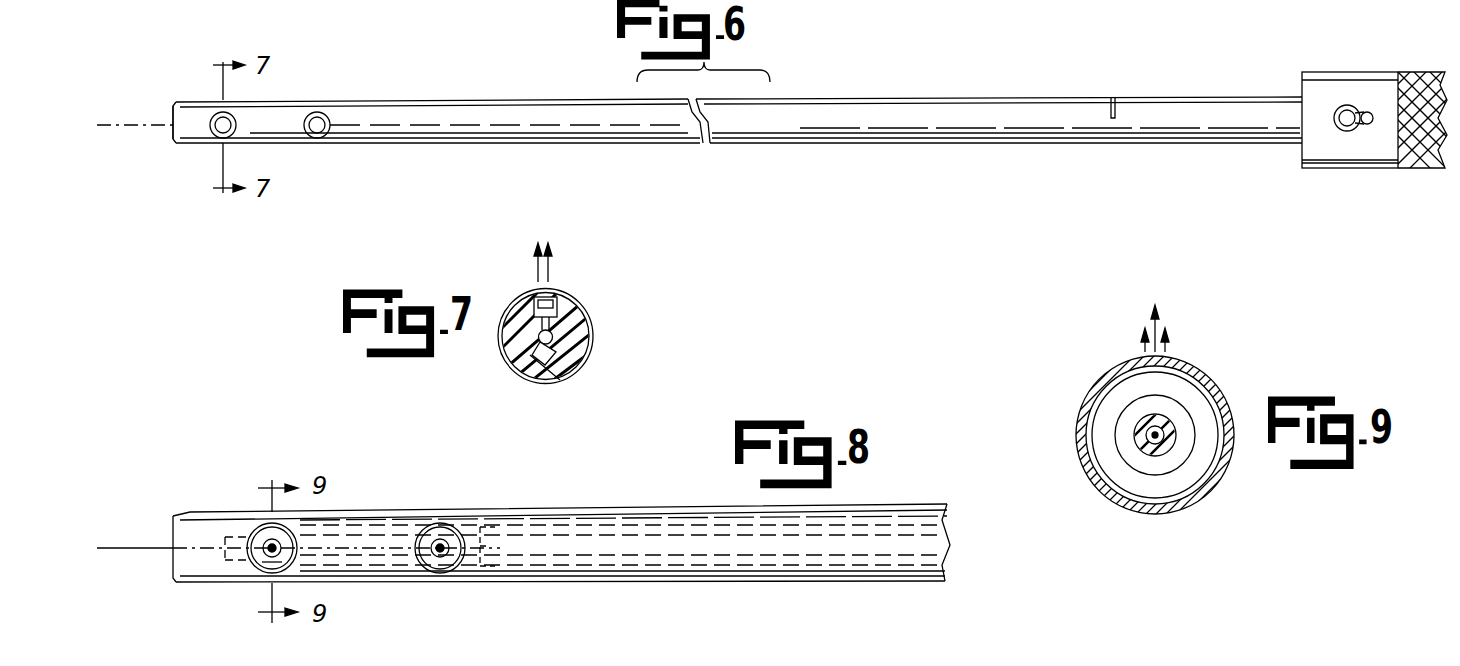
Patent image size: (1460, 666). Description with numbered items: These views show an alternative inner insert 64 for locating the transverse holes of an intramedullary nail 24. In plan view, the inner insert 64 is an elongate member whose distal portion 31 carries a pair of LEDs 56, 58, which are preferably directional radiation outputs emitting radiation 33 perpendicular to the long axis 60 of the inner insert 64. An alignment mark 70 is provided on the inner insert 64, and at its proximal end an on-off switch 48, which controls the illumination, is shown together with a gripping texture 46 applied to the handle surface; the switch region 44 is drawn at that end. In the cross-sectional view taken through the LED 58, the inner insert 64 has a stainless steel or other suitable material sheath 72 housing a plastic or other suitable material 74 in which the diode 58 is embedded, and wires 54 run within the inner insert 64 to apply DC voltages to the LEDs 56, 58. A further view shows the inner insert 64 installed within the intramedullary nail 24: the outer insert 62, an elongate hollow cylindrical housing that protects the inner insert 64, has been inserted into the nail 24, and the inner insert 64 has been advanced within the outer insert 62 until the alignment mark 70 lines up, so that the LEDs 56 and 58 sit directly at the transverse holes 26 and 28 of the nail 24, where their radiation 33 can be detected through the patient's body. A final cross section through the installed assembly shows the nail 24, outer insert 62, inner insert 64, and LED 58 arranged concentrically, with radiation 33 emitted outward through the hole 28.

In FIG. 8, the intramedullary nail 24 is at (500, 508).
In FIG. 9, the intramedullary nail 24 is at (1230, 463).
In FIG. 8, the transverse hole 26 is at (470, 518).
In FIG. 8, the transverse hole 28 is at (255, 532).
In FIG. 9, the transverse hole 28 is at (1193, 372).
In FIG. 6, the distal portion 31 is at (186, 152).
In FIG. 7, the radiation 33 is at (553, 252).
In FIG. 9, the radiation 33 is at (1170, 343).
In FIG. 6, the switch assembly 44 is at (1352, 50).
In FIG. 6, the gripping texture 46 is at (1420, 168).
In FIG. 6, the on-off switch 48 is at (1368, 112).
In FIG. 7, the wires 54 is at (560, 365).
In FIG. 6, the LED 56 is at (320, 125).
In FIG. 8, the LED 56 is at (440, 540).
In FIG. 6, the LED 58 is at (215, 115).
In FIG. 7, the LED 58 is at (548, 298).
In FIG. 8, the LED 58 is at (276, 545).
In FIG. 9, the LED 58 is at (1155, 420).
In FIG. 6, the long axis 60 is at (130, 125).
In FIG. 8, the long axis 60 is at (125, 548).
In FIG. 8, the outer insert 62 is at (525, 565).
In FIG. 9, the outer insert 62 is at (1130, 455).
In FIG. 8, the inner insert 64 is at (268, 560).
In FIG. 9, the inner insert 64 is at (1165, 427).
In FIG. 6, the alignment mark 70 is at (1120, 108).
In FIG. 7, the sheath 72 is at (590, 312).
In FIG. 7, the plastic material 74 is at (590, 348).